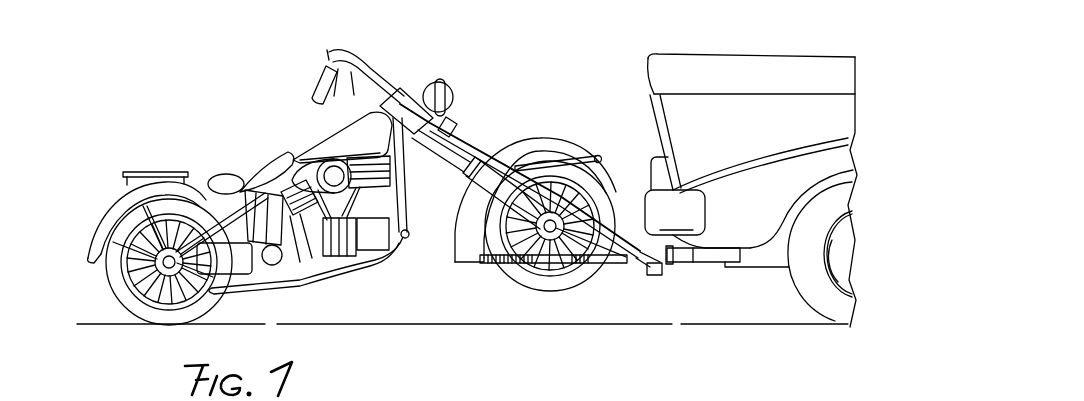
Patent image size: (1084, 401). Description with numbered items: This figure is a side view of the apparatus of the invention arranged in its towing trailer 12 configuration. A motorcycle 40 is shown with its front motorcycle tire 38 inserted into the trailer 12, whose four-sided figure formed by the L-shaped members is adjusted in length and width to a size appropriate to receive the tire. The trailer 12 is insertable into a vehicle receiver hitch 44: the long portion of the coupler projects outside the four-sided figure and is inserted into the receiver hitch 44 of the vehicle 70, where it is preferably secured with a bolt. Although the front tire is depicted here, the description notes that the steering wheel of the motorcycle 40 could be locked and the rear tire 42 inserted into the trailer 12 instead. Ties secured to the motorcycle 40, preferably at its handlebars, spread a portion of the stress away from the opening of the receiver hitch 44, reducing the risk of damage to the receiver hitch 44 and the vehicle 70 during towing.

The towing trailer 12 is at (595, 138).
The motorcycle tire 38 is at (604, 165).
The motorcycle 40 is at (241, 130).
The rear tire 42 is at (112, 277).
The receiver hitch 44 is at (681, 264).
The vehicle 70 is at (759, 38).